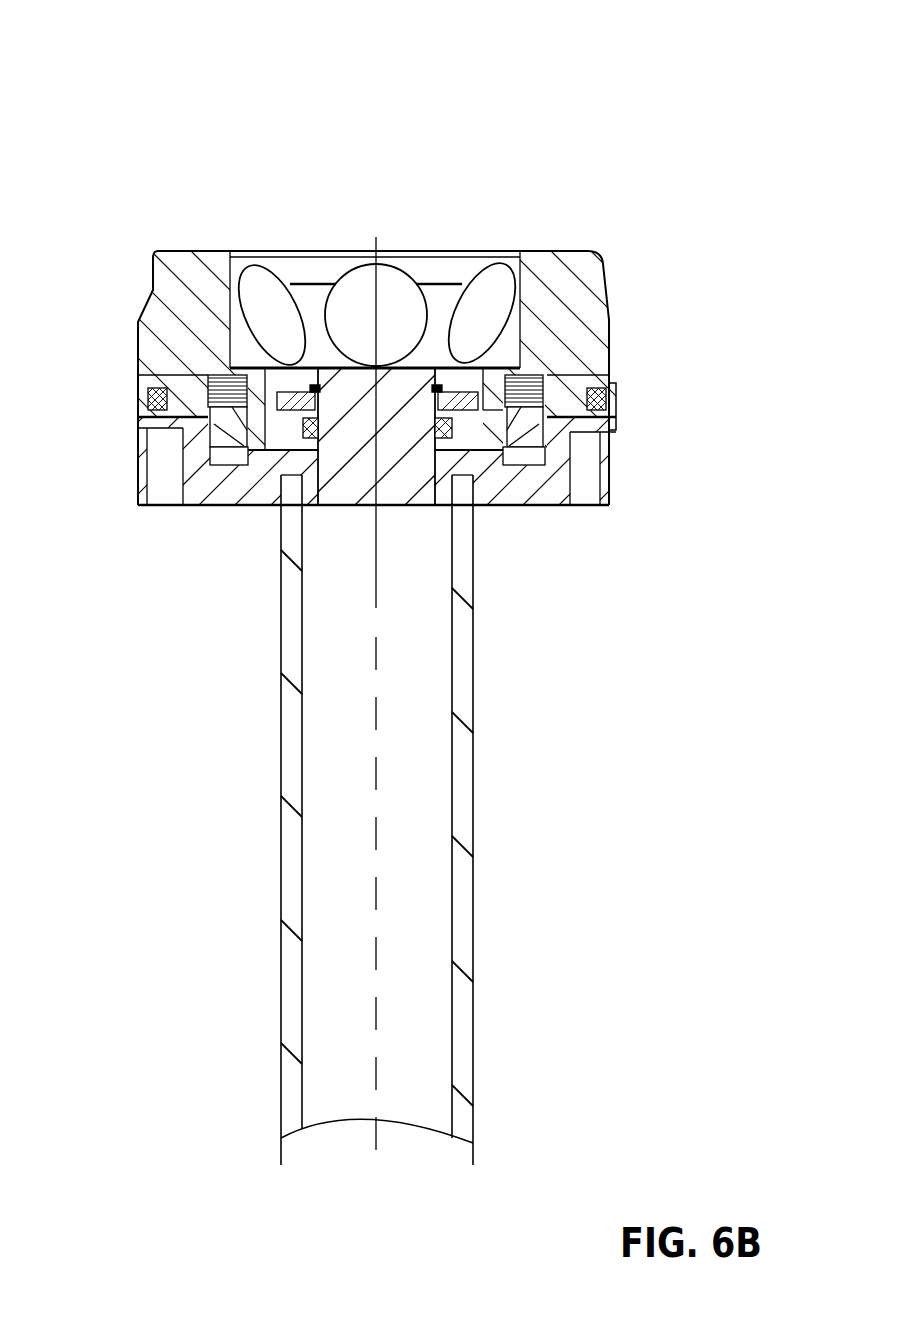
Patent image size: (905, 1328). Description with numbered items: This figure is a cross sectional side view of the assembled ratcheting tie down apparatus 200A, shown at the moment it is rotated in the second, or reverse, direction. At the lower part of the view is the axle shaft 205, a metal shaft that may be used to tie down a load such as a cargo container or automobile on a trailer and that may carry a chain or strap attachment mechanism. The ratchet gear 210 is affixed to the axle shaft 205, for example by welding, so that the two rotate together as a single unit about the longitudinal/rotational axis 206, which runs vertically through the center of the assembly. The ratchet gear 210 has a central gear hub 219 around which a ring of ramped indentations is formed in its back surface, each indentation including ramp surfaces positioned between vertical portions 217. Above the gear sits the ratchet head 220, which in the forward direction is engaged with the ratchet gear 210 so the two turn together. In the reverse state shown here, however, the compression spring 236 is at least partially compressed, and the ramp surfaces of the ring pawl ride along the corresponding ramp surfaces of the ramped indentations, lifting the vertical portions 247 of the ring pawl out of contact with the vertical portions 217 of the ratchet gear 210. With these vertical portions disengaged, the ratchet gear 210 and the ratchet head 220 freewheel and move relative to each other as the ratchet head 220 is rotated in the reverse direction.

The ratcheting tie down apparatus 200A is at (106, 77).
The axle shaft 205 is at (467, 750).
The longitudinal/rotational axis 206 is at (373, 782).
The ratchet gear 210 is at (237, 480).
The vertical portions 217 is at (230, 435).
The gear hub 219 is at (345, 393).
The ratchet head 220 is at (437, 273).
The compression spring 236 is at (208, 392).
The vertical portions 247 is at (225, 422).